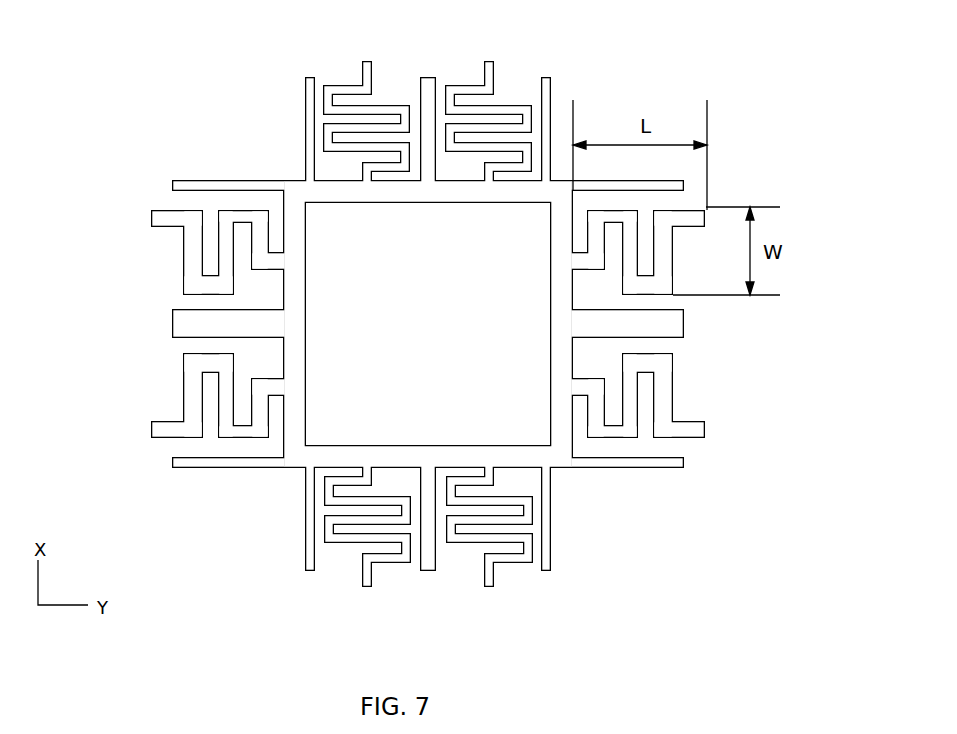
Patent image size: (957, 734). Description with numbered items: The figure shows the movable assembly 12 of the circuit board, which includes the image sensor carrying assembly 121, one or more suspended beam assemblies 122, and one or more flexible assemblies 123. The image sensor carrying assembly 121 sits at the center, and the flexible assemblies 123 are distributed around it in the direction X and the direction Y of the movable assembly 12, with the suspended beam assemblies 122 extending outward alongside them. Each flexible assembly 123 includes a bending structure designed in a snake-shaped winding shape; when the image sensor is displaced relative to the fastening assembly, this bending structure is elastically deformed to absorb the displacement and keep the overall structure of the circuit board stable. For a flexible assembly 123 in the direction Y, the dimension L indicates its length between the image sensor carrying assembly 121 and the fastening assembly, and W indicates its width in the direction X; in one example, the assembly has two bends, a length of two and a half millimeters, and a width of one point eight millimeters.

The movable assembly 12 is at (130, 21).
The image sensor carrying assembly 121 is at (297, 347).
The suspended beam assembly 122 is at (193, 318).
The flexible assembly 123 is at (192, 241).